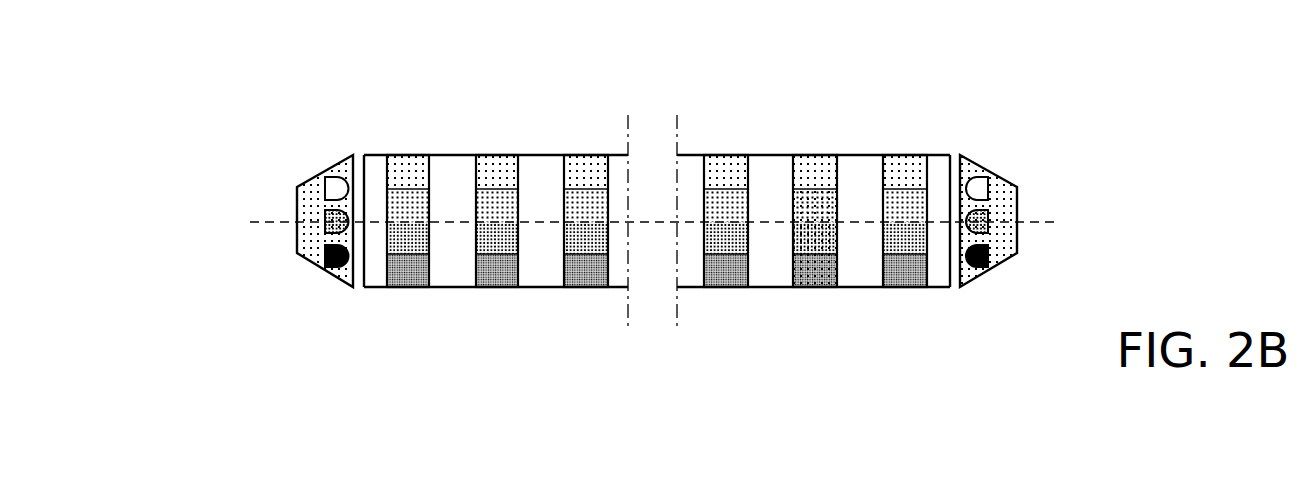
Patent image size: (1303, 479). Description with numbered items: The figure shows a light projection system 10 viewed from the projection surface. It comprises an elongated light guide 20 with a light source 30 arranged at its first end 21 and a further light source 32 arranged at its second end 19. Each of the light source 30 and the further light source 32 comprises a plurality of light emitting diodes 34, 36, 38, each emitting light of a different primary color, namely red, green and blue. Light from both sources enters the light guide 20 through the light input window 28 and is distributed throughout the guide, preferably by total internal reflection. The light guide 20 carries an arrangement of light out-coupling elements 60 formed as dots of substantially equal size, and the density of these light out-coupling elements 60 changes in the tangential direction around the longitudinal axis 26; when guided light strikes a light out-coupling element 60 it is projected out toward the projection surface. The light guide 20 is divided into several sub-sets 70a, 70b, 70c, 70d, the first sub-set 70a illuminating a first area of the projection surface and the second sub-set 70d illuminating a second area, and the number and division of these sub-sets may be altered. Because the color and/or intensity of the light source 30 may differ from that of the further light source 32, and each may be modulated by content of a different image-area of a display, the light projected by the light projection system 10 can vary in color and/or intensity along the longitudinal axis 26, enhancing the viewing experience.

The light projection system 10 is at (867, 77).
The second end 19 is at (365, 303).
The light guide 20 is at (772, 163).
The first end 21 is at (950, 303).
The longitudinal axis 26 is at (263, 222).
The light input window 28 is at (371, 163).
The light source 30 is at (1010, 193).
The further light source 32 is at (300, 197).
The light emitting diode 34 is at (330, 178).
The light emitting diode 36 is at (327, 230).
The light emitting diode 38 is at (337, 272).
The light out-coupling elements 60 is at (728, 280).
The first sub-set 70a is at (588, 277).
The sub-set 70b is at (562, 238).
The sub-set 70c is at (573, 205).
The second sub-set 70d is at (590, 163).